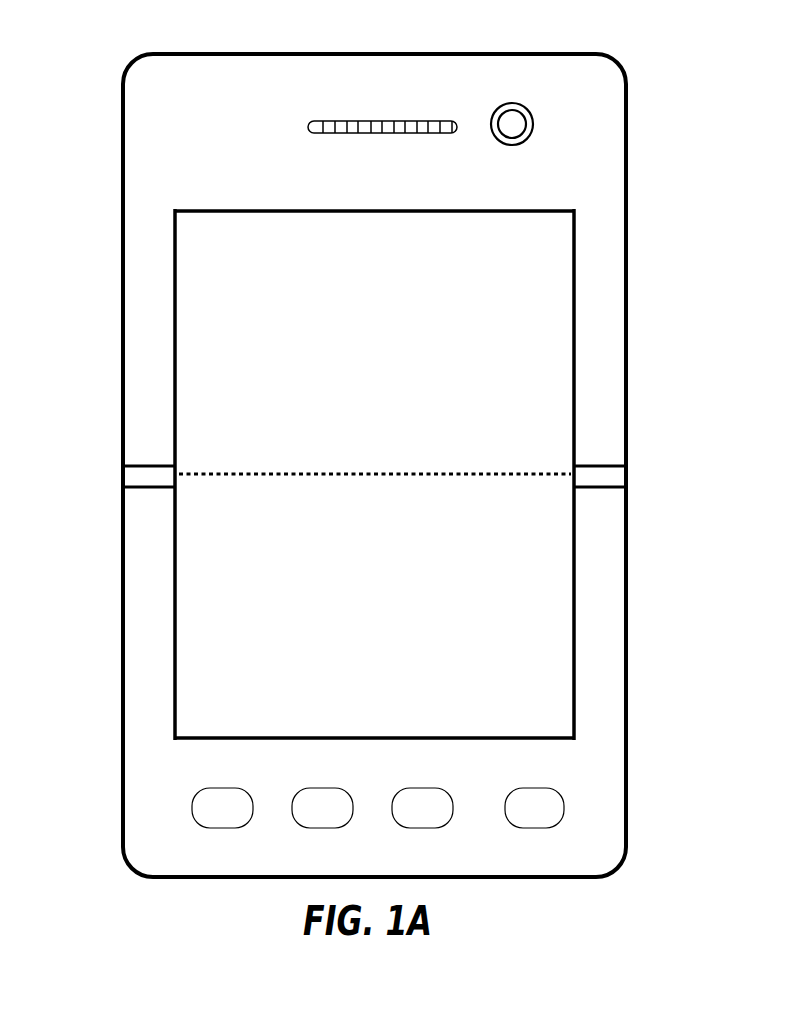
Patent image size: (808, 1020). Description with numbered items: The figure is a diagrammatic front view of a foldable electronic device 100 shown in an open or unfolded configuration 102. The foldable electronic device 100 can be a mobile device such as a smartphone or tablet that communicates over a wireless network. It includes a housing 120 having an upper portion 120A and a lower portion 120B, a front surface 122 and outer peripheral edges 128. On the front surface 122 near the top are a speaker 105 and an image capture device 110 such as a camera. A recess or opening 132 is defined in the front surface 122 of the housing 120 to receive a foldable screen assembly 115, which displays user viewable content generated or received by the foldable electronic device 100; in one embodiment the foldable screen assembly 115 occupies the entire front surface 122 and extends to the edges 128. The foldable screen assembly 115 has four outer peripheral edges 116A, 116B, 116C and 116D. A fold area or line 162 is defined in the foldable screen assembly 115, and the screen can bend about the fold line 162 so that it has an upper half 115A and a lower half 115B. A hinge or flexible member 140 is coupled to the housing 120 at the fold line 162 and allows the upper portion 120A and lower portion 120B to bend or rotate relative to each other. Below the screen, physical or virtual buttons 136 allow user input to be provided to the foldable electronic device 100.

The foldable electronic device 100 is at (626, 122).
The unfolded configuration 102 is at (668, 55).
The speaker 105 is at (312, 122).
The image capture device 110 is at (534, 117).
The foldable screen assembly 115 is at (391, 267).
The upper half of foldable screen assembly 115A is at (547, 262).
The lower half of foldable screen assembly 115B is at (540, 695).
The outer peripheral edge of foldable screen assembly 116A is at (175, 350).
The outer peripheral edge of foldable screen assembly 116B is at (574, 386).
The outer peripheral edge of foldable screen assembly 116C is at (470, 212).
The outer peripheral edge of foldable screen assembly 116D is at (325, 738).
The housing 120 is at (626, 190).
The upper portion of housing 120A is at (598, 313).
The lower portion of housing 120B is at (598, 592).
The front surface 122 is at (590, 159).
The outer peripheral edges 128 is at (627, 375).
The recess 132 is at (575, 645).
The buttons 136 is at (563, 808).
The flexible member 140 is at (598, 490).
The fold line 162 is at (295, 475).